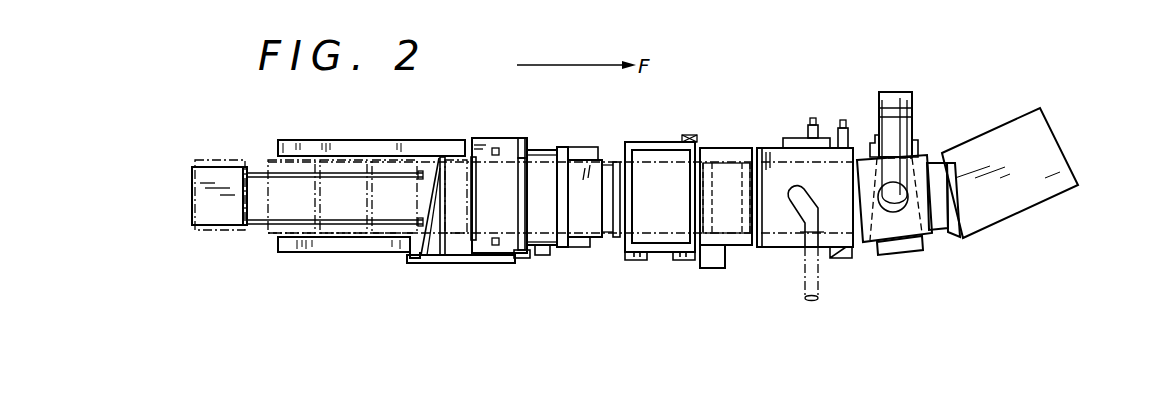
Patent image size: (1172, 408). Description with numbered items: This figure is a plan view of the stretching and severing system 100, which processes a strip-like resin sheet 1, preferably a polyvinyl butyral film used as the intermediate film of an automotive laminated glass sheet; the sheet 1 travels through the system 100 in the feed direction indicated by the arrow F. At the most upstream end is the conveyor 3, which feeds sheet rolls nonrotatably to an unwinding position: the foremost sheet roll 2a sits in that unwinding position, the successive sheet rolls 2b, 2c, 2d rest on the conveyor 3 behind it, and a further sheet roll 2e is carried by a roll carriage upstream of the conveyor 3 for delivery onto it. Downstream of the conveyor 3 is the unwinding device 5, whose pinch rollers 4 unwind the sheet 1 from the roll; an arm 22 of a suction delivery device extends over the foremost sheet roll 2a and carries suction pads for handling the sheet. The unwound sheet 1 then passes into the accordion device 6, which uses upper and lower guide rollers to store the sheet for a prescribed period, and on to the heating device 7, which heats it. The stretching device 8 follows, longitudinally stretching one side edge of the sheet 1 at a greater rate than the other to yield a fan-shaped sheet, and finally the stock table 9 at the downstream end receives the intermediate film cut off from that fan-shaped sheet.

The stretching and severing system 100 is at (885, 58).
The strip-like resin sheet 1 is at (730, 235).
The foremost sheet roll 2a is at (457, 177).
The sheet roll 2b is at (388, 233).
The sheet roll 2c is at (348, 208).
The sheet roll 2d is at (297, 228).
The sheet roll 2e is at (217, 228).
The conveyor 3 is at (348, 155).
The pinch rollers 4 is at (518, 185).
The unwinding device 5 is at (542, 187).
The accordion device 6 is at (661, 180).
The heating device 7 is at (780, 175).
The stretching device 8 is at (890, 225).
The stock table 9 is at (1018, 188).
The arm 22 is at (443, 220).